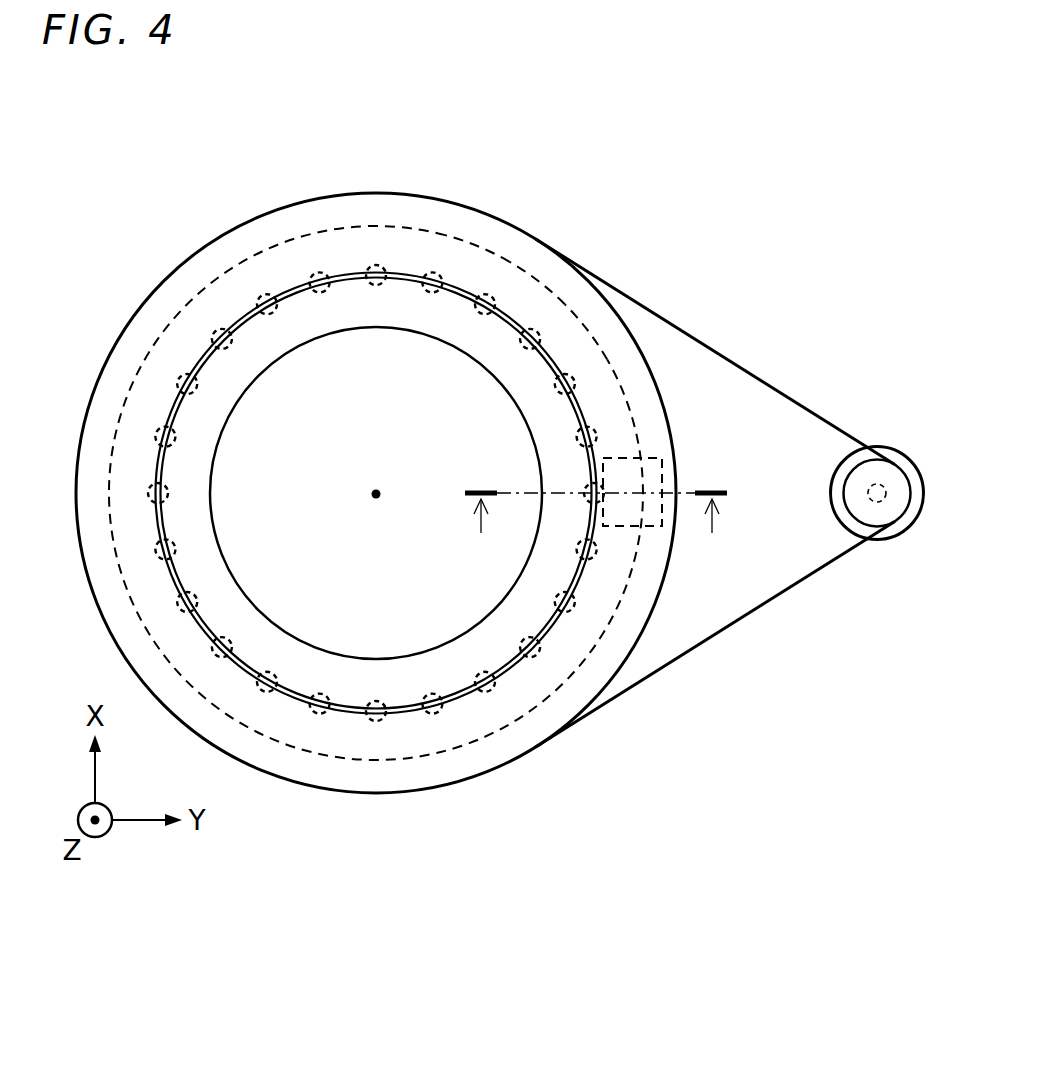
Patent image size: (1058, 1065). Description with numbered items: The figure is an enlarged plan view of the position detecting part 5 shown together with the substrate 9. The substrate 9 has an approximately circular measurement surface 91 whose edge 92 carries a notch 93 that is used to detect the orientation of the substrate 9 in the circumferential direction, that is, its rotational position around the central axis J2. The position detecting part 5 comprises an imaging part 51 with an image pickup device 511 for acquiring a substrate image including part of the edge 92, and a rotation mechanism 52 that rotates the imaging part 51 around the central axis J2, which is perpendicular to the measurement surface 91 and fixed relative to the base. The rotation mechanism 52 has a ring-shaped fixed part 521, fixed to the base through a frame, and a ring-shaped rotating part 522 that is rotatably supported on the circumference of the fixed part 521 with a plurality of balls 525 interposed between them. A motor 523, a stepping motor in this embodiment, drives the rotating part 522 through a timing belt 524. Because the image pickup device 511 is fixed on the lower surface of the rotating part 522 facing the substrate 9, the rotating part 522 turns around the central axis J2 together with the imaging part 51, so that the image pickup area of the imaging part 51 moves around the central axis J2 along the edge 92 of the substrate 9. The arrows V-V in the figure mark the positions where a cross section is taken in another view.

The position detecting part 5 is at (88, 229).
The rotation mechanism 52 is at (372, 870).
The ring-shaped fixed part 521 is at (354, 677).
The ring-shaped rotating part 522 is at (415, 772).
The balls 525 is at (258, 287).
The central axis J2 is at (377, 500).
The substrate 9 is at (432, 232).
The measurement surface 91 is at (467, 277).
The edge 92 is at (533, 280).
The notch 93 is at (586, 343).
The imaging part 51 is at (687, 747).
The image pickup device 511 is at (653, 527).
The motor 523 is at (878, 540).
The timing belt 524 is at (766, 604).